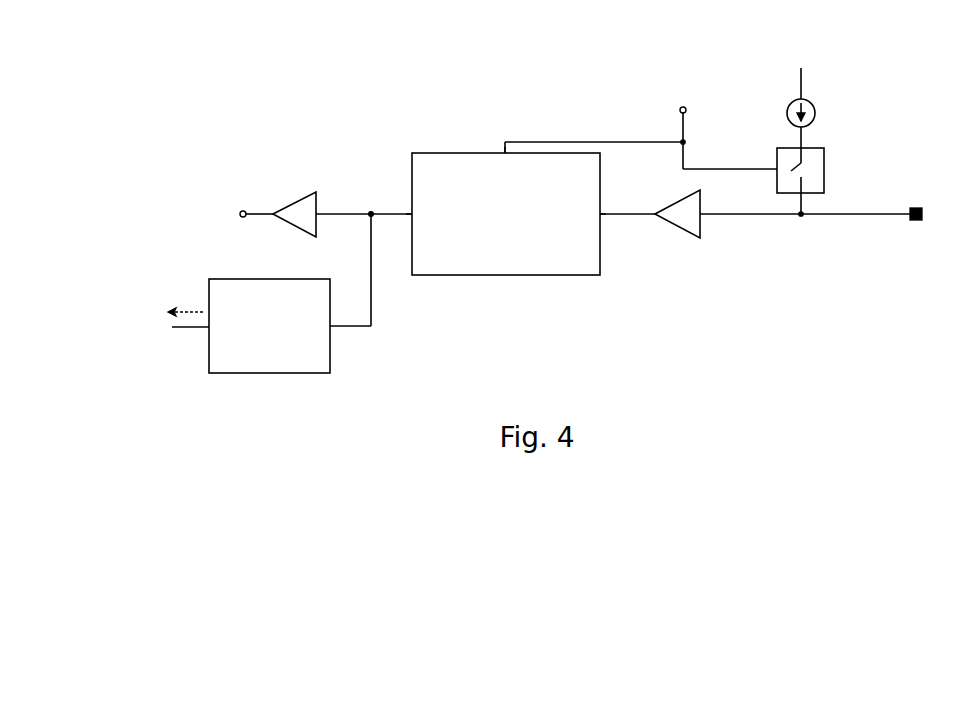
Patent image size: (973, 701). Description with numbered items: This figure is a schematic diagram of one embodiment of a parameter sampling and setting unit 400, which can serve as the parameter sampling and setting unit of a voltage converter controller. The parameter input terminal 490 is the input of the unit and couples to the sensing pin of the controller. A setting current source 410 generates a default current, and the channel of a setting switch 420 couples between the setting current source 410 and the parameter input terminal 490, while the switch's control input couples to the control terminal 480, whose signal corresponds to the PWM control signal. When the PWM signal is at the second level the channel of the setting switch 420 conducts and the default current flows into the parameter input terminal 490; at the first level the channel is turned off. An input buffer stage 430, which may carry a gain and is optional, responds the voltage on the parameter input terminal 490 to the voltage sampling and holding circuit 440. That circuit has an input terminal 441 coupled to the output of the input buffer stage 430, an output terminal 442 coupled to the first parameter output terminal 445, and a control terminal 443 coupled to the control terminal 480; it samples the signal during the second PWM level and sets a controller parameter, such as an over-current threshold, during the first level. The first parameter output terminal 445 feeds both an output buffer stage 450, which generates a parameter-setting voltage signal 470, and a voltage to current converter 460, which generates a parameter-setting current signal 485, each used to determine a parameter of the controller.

The parameter sampling and setting unit 400 is at (171, 64).
The setting current source 410 is at (816, 113).
The setting switch 420 is at (824, 172).
The input buffer stage 430 is at (675, 228).
The voltage sampling and holding circuit 440 is at (549, 260).
The input terminal 441 is at (590, 218).
The output terminal 442 is at (448, 218).
The control terminal 443 is at (520, 180).
The first parameter output terminal 445 is at (389, 210).
The output buffer stage 450 is at (295, 196).
The voltage to current converter 460 is at (255, 365).
The parameter-setting voltage signal 470 is at (244, 209).
The control terminal 480 is at (683, 105).
The parameter-setting current signal 485 is at (185, 307).
The parameter input terminal 490 is at (916, 222).